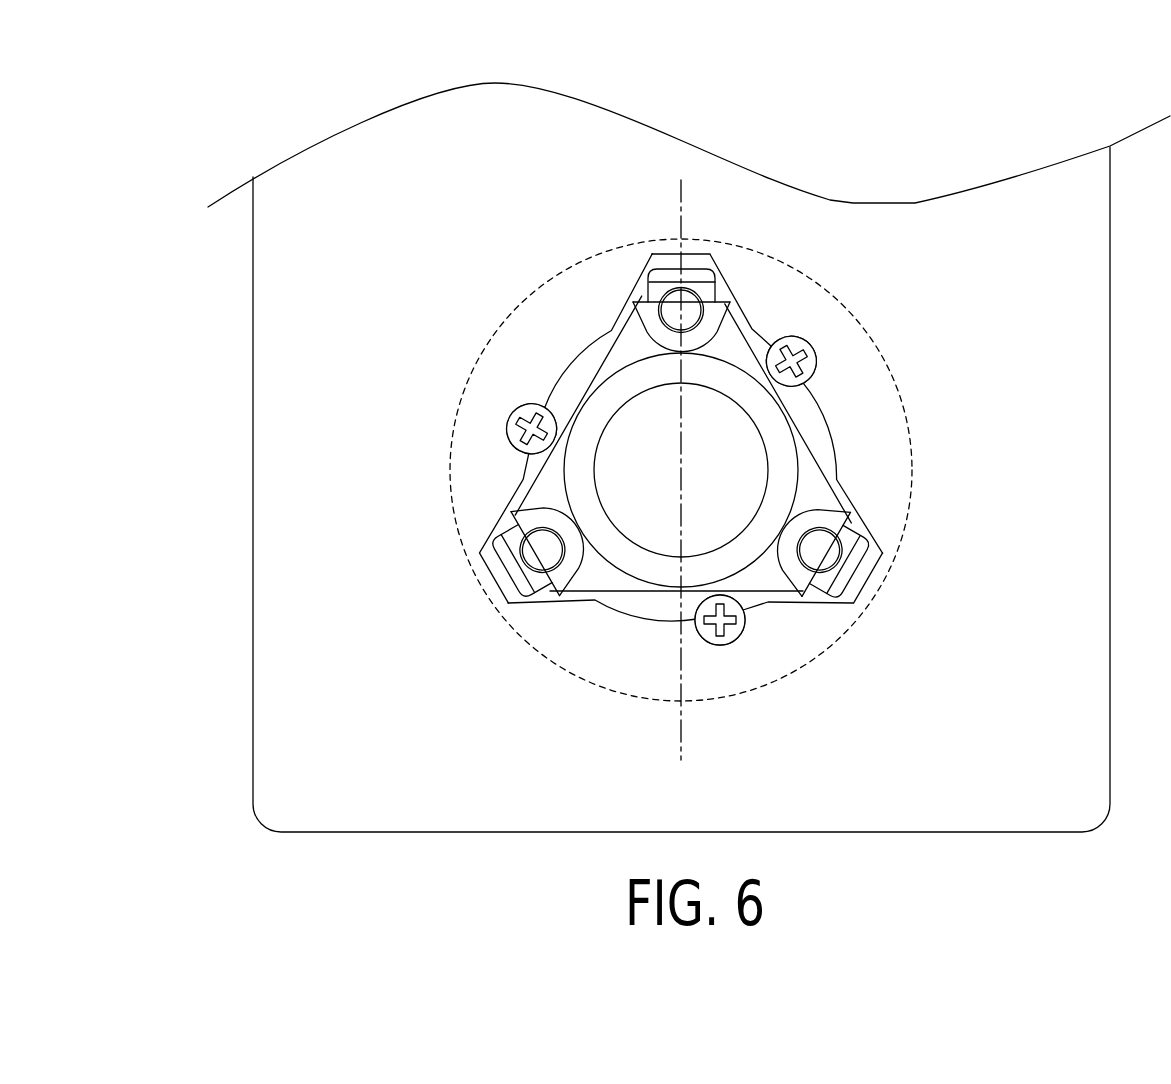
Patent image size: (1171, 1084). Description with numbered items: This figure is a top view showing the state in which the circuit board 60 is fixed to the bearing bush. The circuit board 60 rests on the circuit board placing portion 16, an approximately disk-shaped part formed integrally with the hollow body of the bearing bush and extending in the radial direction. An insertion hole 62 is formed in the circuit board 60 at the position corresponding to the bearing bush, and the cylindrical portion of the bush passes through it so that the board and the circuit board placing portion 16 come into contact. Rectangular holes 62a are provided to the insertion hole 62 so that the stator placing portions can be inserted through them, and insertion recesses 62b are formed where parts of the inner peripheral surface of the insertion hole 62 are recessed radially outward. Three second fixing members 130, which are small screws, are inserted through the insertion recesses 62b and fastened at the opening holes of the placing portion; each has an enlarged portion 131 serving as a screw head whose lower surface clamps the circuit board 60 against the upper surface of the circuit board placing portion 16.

The circuit board placing portion 16 is at (578, 648).
The circuit board 60 is at (300, 350).
The insertion hole 62 is at (827, 417).
The rectangular hole 62a is at (740, 307).
The insertion recess 62b is at (813, 337).
The second fixing member 130 is at (507, 423).
The enlarged portion 131 is at (531, 424).